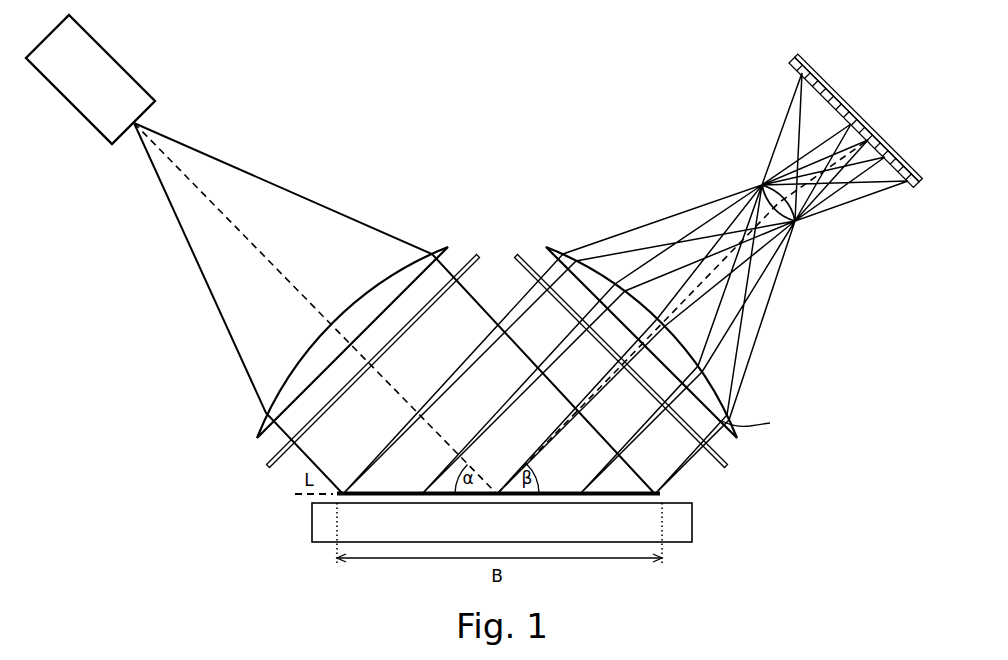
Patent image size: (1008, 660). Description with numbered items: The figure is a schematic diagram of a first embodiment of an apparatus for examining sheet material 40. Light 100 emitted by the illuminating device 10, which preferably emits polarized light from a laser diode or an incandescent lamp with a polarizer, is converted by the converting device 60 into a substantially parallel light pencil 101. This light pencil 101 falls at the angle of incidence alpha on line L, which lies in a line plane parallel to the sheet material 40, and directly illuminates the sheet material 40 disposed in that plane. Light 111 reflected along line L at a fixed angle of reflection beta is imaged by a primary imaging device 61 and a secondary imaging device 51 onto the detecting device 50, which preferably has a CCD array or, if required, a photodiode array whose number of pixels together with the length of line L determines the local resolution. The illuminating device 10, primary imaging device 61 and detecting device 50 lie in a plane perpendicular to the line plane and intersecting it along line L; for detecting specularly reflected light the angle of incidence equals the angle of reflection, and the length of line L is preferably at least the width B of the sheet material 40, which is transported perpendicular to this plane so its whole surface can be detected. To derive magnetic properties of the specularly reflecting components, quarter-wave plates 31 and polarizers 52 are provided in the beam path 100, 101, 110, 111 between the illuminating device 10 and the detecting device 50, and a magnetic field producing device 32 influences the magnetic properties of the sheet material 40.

The illuminating device 10 is at (95, 57).
The light 100 is at (226, 326).
The converting device 60 is at (437, 248).
The light pencil 101 is at (478, 295).
The primary imaging device 61 is at (550, 248).
The beam path portion 110 is at (713, 323).
The reflected light 111 is at (765, 425).
The quarter-wave plates 31 is at (268, 467).
The magnetic field producing device 32 is at (312, 523).
The sheet material 40 is at (660, 496).
The detecting device 50 is at (864, 121).
The secondary imaging device 51 is at (797, 223).
The polarizers 52 is at (790, 68).